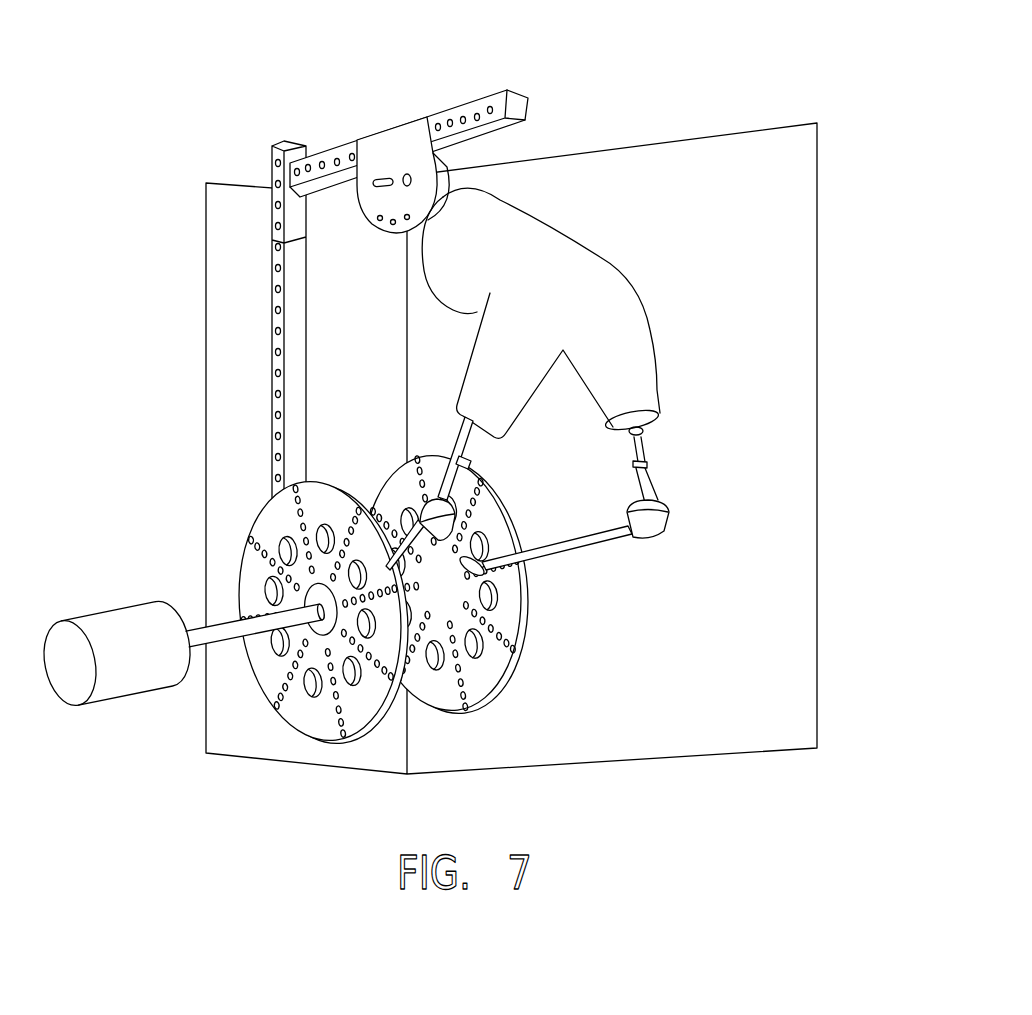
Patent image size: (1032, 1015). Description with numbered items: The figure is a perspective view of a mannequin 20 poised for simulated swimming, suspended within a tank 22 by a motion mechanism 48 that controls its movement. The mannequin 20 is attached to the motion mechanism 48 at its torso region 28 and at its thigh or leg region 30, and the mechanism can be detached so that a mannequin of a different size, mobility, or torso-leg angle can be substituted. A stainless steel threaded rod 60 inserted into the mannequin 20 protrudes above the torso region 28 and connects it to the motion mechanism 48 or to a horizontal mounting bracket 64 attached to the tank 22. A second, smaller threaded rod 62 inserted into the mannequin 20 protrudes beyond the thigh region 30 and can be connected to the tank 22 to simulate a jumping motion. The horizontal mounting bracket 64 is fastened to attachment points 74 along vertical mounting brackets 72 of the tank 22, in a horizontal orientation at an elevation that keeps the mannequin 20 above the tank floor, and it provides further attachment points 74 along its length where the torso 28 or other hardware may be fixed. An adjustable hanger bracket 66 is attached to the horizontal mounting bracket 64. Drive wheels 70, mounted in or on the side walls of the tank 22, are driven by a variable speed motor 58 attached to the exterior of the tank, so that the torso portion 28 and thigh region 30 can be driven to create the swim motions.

The mannequin 20 is at (580, 302).
The tank 22 is at (817, 244).
The torso region 28 is at (497, 210).
The thigh or leg region 30 is at (473, 390).
The motion mechanism 48 is at (409, 250).
The variable speed motor 58 is at (128, 608).
The threaded rod 60 is at (493, 161).
The threaded rod 62 is at (472, 438).
The horizontal mounting bracket 64 is at (493, 88).
The adjustable hanger bracket 66 is at (377, 210).
The drive wheels 70 is at (320, 717).
The vertical mounting brackets 72 is at (292, 373).
The attachment points 74 is at (327, 160).